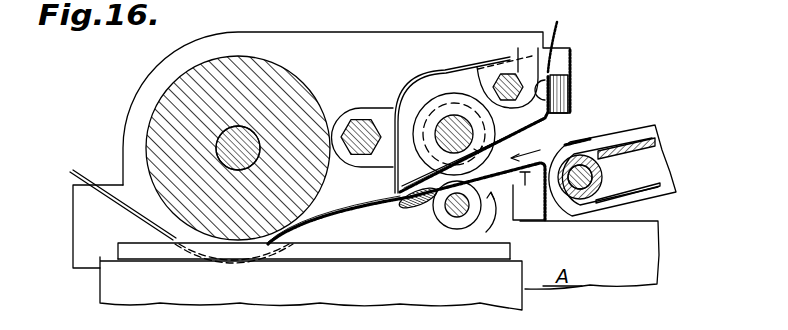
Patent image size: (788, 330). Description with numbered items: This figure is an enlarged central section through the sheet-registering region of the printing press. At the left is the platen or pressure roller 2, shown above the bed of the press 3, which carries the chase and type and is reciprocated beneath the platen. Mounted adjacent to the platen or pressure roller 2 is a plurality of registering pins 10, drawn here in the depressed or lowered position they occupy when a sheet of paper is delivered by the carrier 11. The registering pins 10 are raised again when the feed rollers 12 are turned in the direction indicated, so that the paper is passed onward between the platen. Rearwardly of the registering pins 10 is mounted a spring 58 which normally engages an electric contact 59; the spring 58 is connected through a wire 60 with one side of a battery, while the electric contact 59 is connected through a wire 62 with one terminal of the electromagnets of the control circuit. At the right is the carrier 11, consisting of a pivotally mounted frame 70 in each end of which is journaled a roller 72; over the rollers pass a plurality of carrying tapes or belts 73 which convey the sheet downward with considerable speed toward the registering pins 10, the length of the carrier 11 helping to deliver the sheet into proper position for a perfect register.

The platen or pressure roller 2 is at (260, 72).
The bed of the press 3 is at (311, 283).
The registering pins 10 is at (444, 73).
The carrier 11 is at (643, 134).
The feed rollers 12 is at (454, 134).
The spring 58 is at (507, 92).
The electric contact 59 is at (420, 205).
The wire 60 is at (560, 46).
The wire 62 is at (528, 196).
The frame 70 is at (665, 191).
The roller 72 is at (577, 207).
The carrying tapes or belts 73 is at (658, 130).